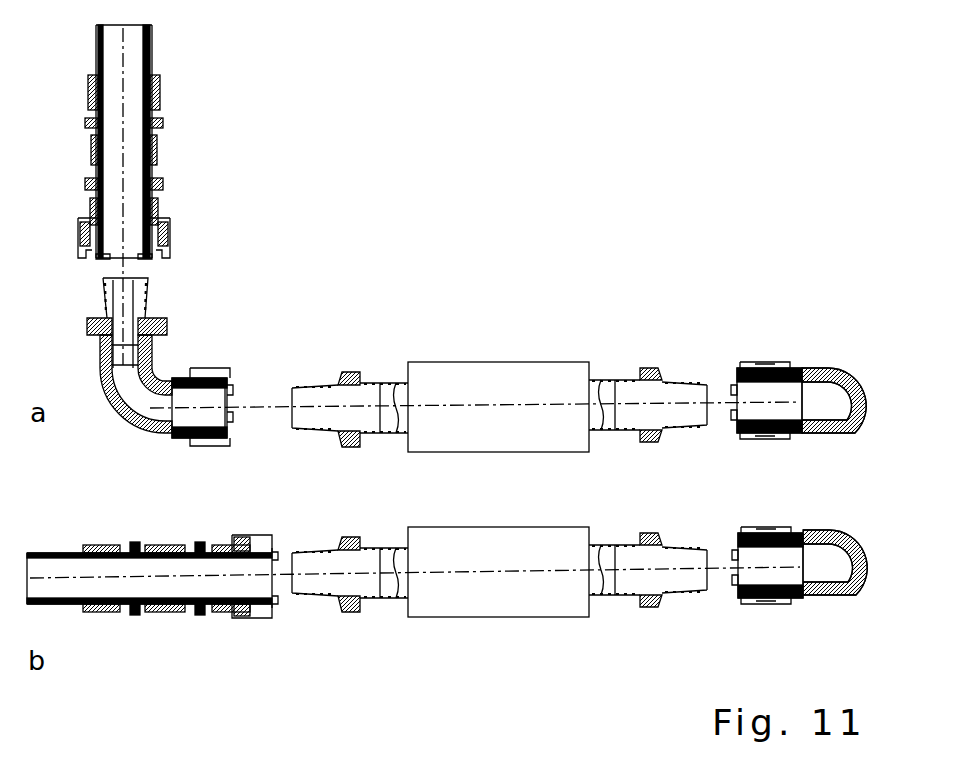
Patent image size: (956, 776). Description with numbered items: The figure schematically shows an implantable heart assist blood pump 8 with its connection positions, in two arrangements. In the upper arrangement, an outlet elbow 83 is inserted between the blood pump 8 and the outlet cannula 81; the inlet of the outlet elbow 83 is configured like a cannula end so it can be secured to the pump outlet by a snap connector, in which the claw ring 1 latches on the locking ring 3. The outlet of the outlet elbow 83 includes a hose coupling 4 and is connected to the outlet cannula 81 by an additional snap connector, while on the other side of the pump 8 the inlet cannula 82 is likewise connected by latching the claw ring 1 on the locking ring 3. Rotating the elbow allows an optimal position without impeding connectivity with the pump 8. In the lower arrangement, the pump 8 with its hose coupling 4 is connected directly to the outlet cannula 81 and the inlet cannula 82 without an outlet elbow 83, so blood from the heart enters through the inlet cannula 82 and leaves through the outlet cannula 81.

The claw ring 1 is at (168, 255).
The locking ring 3 is at (88, 329).
The hose coupling 4 is at (135, 283).
The blood pump 8 is at (477, 382).
The outlet cannula 81 is at (140, 123).
The inlet cannula 82 is at (828, 368).
The outlet elbow 83 is at (138, 433).